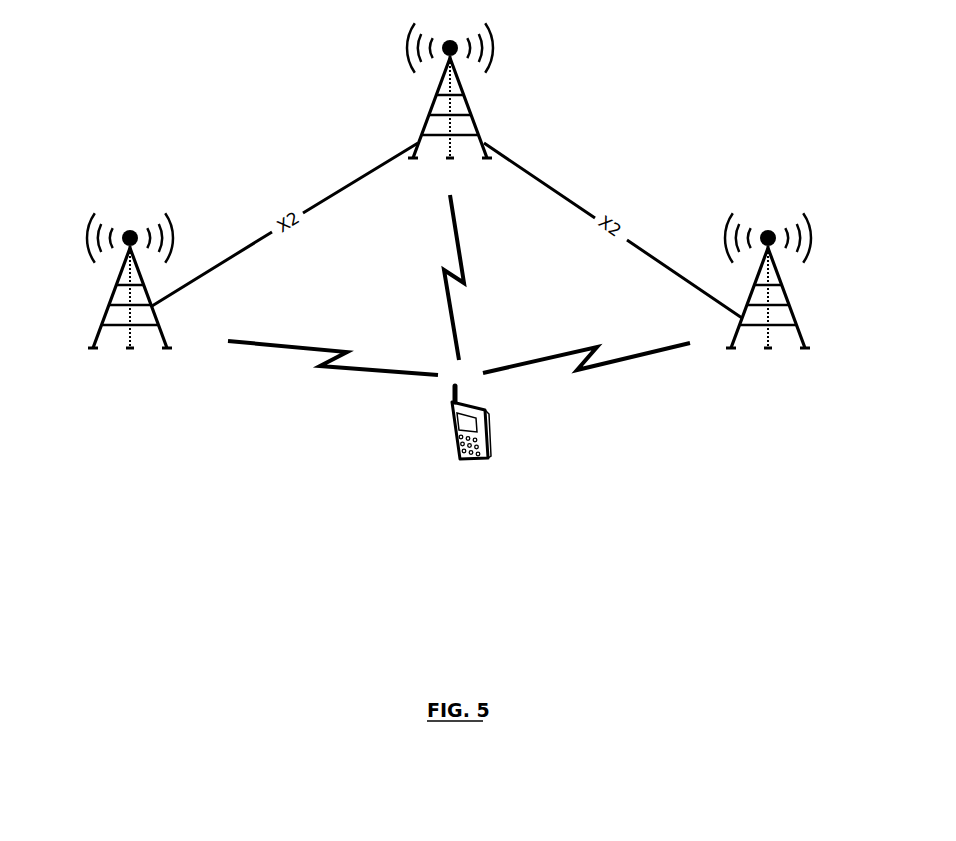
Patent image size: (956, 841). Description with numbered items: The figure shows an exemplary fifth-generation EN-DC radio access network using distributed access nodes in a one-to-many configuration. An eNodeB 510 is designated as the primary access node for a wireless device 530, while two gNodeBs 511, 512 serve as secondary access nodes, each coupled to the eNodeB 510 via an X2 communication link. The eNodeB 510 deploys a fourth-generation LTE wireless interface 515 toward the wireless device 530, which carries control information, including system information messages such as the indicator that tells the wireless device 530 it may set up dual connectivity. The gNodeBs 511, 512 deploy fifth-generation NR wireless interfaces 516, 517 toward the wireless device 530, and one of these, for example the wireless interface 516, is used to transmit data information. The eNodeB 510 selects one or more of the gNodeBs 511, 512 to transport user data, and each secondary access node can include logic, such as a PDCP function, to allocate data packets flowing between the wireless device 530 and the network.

The eNodeB 510 is at (430, 122).
The gNodeB 511 is at (105, 328).
The gNodeB 512 is at (795, 318).
The wireless interface 515 is at (444, 272).
The 5G wireless interface 516 is at (320, 367).
The wireless link to gNB 512 517 is at (593, 368).
The wireless device 530 is at (452, 450).